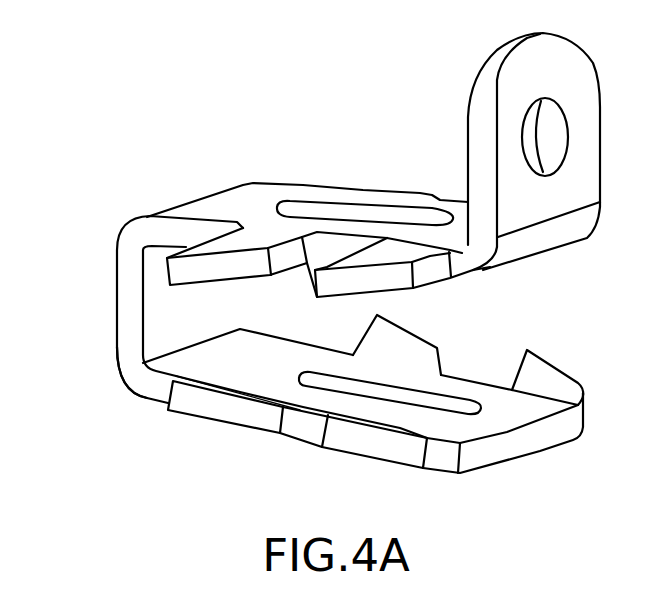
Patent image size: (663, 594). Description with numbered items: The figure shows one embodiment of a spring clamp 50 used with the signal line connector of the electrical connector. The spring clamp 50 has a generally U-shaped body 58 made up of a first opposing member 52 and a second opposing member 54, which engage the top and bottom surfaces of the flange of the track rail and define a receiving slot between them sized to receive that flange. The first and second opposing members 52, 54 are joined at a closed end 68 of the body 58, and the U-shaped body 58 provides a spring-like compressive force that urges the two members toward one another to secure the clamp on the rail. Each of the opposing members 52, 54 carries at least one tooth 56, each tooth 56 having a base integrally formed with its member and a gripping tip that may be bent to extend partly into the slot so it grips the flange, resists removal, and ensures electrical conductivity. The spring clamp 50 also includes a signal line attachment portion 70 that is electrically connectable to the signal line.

The spring clamp 50 is at (324, 267).
The first opposing member 52 is at (480, 430).
The second opposing member 54 is at (383, 202).
The tooth 56 is at (407, 343).
The U-shaped body 58 is at (122, 410).
The closed end 68 is at (130, 302).
The signal line attachment portion 70 is at (561, 91).